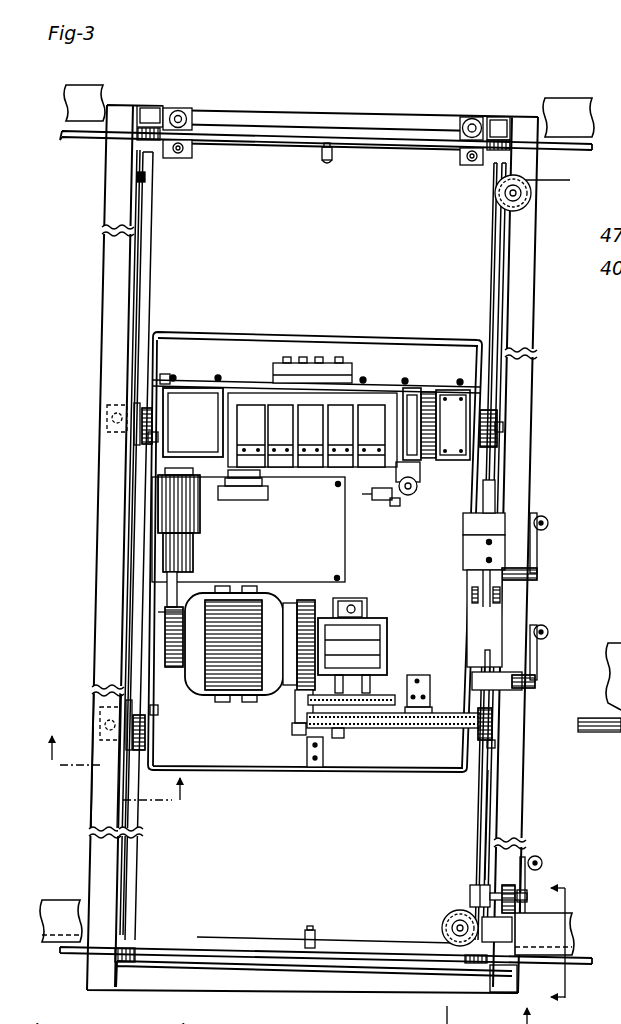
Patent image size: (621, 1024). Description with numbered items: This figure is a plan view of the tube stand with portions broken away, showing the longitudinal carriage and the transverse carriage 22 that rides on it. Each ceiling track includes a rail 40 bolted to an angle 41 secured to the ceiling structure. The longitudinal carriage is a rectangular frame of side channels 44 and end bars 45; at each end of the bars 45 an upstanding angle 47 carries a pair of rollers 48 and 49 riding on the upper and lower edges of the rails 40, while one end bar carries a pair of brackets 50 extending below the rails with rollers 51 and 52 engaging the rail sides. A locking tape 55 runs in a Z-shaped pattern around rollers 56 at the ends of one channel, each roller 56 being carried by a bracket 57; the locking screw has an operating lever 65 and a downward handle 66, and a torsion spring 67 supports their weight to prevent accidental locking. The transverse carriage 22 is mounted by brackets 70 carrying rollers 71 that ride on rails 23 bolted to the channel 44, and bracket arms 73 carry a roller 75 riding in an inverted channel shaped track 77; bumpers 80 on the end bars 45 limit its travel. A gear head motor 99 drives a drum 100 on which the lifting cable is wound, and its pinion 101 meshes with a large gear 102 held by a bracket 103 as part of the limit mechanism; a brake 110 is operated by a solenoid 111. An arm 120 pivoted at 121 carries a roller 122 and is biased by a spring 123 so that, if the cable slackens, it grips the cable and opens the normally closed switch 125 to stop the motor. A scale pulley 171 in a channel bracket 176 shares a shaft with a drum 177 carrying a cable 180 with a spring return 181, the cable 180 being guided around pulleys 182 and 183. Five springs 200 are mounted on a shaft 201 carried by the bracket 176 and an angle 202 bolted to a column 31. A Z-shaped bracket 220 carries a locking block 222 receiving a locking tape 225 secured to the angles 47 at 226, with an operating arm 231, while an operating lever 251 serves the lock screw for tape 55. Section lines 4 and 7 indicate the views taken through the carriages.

The section line 4- 4 is at (586, 905).
The section line 7- 7 is at (113, 778).
The transverse carriage 22 is at (458, 488).
The rails 23 is at (147, 218).
The column 31 is at (223, 402).
The rail 40 is at (68, 139).
The angle 41 is at (74, 92).
The side channels 44 is at (115, 280).
The end bars 45 is at (318, 110).
The upstanding angle 47 is at (148, 118).
The roller 48 is at (150, 134).
The roller 49 is at (610, 295).
The brackets 50 is at (195, 152).
The rollers 51 is at (182, 115).
The rollers 52 is at (178, 156).
The locking tape 55 is at (497, 250).
The rollers 56 is at (532, 195).
The bracket 57 is at (577, 937).
The operating lever 65 is at (527, 883).
The handle 66 is at (470, 890).
The torsion spring 67 is at (508, 887).
The brackets 70 is at (147, 407).
The rollers 71 is at (140, 442).
The bracket arms 73 is at (143, 417).
The roller 75 is at (107, 412).
The inverted channel shaped track 77 is at (100, 700).
The bumpers 80 is at (322, 162).
The motor 99 is at (233, 607).
The drum 100 is at (385, 693).
The pinion 101 is at (352, 735).
The large gear 102 is at (420, 728).
The bracket 103 is at (417, 680).
The brake 110 is at (167, 643).
The solenoid 111 is at (160, 505).
The arm 120 is at (297, 725).
The pivot 121 is at (312, 592).
The roller 122 is at (293, 702).
The spring 123 is at (340, 740).
The normally closed switch 125 is at (307, 750).
The pulley 171 is at (437, 397).
The channel bracket 176 is at (398, 407).
The drum 177 is at (423, 397).
The cable 180 is at (398, 507).
The spring return 181 is at (403, 403).
The pulley 182 is at (410, 496).
The pulley 183 is at (378, 500).
The springs 200 is at (277, 410).
The shaft 201 is at (223, 453).
The angle 202 is at (162, 378).
The Z-shaped bracket 220 is at (493, 630).
The locking block 222 is at (500, 690).
The locking tape 225 is at (495, 788).
The tape securing point 226 is at (620, 326).
The operating arm 231 is at (537, 652).
The operating lever 251 is at (537, 552).